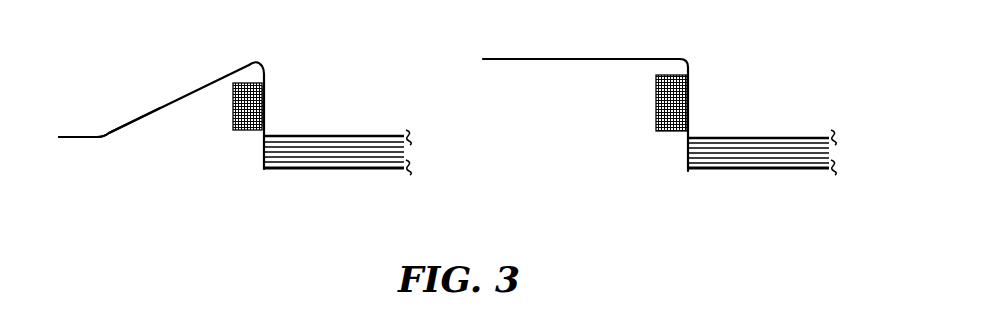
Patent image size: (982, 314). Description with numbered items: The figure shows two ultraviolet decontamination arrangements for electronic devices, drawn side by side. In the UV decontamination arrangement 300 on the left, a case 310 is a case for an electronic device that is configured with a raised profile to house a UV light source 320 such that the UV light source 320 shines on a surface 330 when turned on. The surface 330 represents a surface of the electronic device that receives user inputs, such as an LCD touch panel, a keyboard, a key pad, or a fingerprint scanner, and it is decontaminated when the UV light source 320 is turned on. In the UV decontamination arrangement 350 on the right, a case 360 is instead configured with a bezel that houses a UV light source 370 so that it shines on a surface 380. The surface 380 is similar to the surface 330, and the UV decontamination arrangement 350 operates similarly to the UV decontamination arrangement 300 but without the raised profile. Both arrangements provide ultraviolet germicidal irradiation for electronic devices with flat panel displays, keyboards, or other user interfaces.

The UV decontamination arrangement 300 is at (235, 147).
The case 310 is at (93, 137).
The UV light source 320 is at (232, 120).
The surface 330 is at (316, 136).
The UV decontamination arrangement 350 is at (659, 129).
The case 360 is at (515, 58).
The UV light source 370 is at (656, 120).
The surface 380 is at (740, 138).